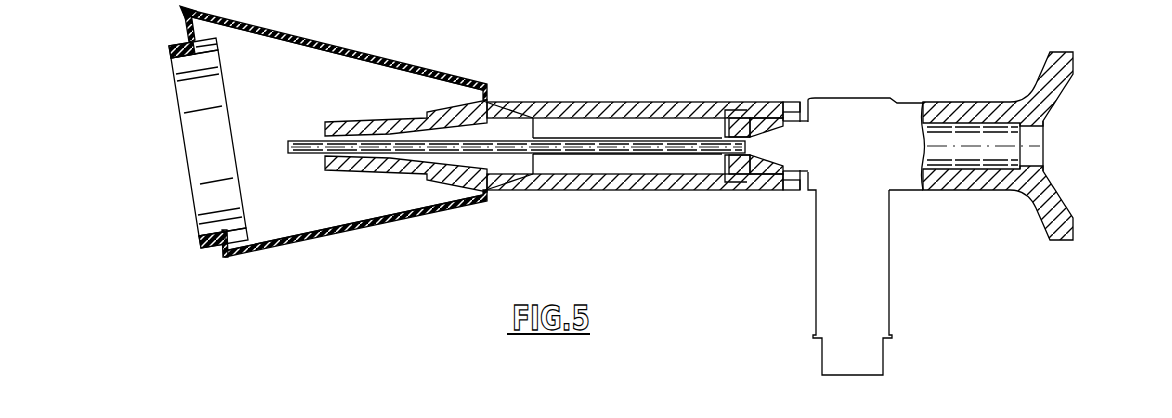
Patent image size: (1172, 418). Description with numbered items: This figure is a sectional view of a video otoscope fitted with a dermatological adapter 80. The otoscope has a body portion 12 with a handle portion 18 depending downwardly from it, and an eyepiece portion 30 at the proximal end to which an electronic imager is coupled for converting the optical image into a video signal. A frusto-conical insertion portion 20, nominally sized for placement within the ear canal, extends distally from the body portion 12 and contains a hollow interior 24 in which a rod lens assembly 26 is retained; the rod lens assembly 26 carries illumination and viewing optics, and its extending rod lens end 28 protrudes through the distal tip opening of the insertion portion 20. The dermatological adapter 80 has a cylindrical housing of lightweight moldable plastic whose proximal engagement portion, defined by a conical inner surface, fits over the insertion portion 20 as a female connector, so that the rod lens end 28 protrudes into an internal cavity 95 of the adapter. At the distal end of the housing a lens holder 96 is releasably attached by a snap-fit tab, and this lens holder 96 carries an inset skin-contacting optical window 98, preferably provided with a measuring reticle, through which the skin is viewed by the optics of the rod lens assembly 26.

The body portion 12 is at (828, 98).
The handle portion 18 is at (872, 288).
The frusto-conical insertion portion 20 is at (452, 122).
The hollow interior 24 is at (632, 165).
The rod lens assembly 26 is at (500, 150).
The extending rod lens end 28 is at (302, 152).
The eyepiece portion 30 is at (1075, 232).
The dermatological adapter 80 is at (371, 50).
The internal cavity 95 is at (277, 72).
The lens holder 96 is at (168, 44).
The skin-contacting optical window 98 is at (190, 102).